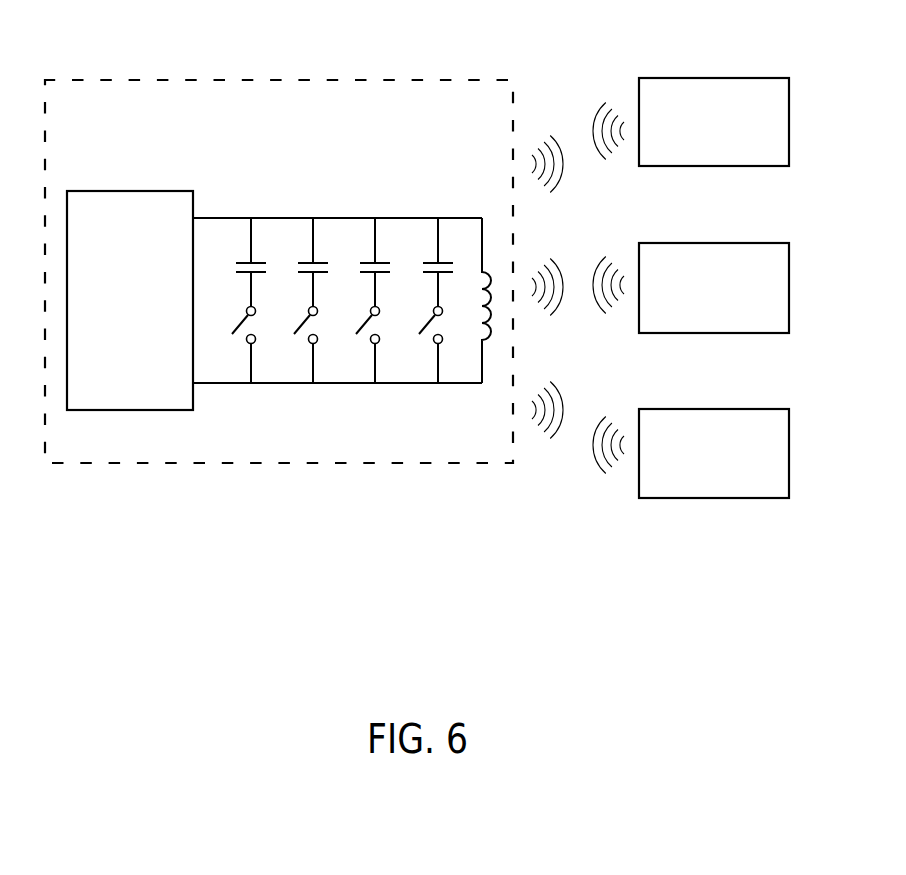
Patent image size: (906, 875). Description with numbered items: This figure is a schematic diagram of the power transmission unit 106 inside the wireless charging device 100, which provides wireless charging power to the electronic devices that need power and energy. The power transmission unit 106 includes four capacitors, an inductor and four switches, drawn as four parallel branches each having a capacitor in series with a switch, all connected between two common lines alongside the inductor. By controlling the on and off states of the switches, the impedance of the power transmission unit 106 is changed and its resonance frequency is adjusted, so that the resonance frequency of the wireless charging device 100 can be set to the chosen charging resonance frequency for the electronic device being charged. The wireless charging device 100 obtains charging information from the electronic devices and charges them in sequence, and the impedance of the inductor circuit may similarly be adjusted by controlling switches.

The wireless charging device 100 is at (275, 79).
The power transmission unit 106 is at (128, 190).